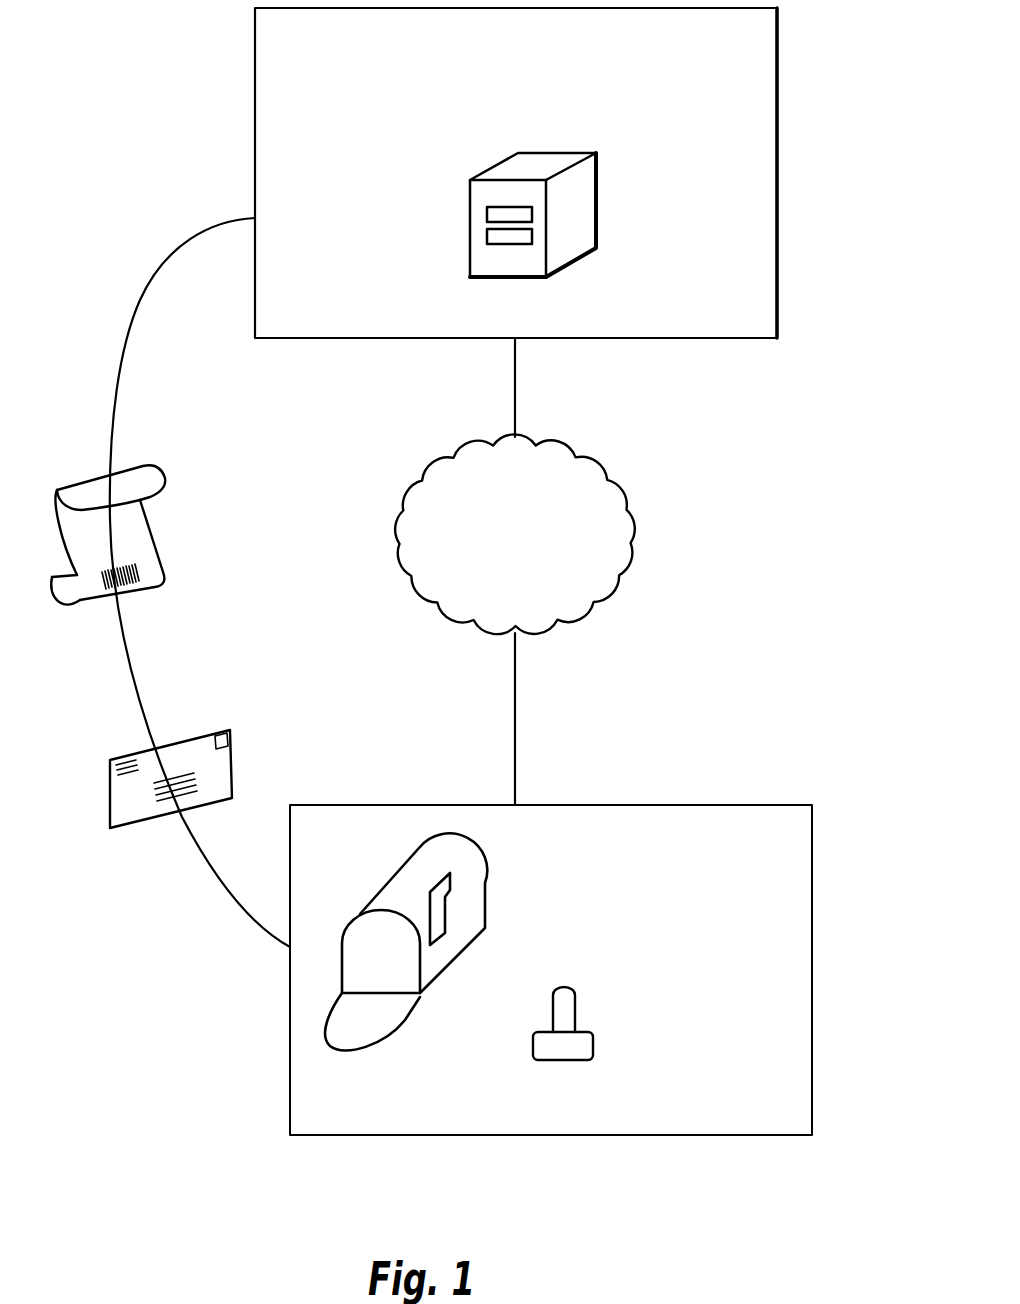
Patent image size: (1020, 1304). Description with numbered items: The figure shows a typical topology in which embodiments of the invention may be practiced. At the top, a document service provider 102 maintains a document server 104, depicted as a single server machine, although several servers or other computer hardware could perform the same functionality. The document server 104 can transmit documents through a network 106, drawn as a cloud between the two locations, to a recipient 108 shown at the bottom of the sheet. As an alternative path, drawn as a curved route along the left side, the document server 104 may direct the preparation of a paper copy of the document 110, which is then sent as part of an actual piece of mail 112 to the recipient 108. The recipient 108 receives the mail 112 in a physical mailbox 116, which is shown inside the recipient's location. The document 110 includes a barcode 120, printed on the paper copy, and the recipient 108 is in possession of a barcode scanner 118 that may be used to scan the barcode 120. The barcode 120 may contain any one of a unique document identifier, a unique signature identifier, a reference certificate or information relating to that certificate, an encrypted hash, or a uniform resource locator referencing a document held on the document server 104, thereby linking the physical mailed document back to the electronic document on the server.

The document service provider 102 is at (779, 173).
The document server 104 is at (600, 198).
The network 106 is at (638, 548).
The recipient 108 is at (814, 970).
The document 110 is at (155, 525).
The mail 112 is at (233, 762).
The physical mailbox 116 is at (488, 895).
The barcode scanner 118 is at (563, 987).
The barcode 120 is at (147, 568).